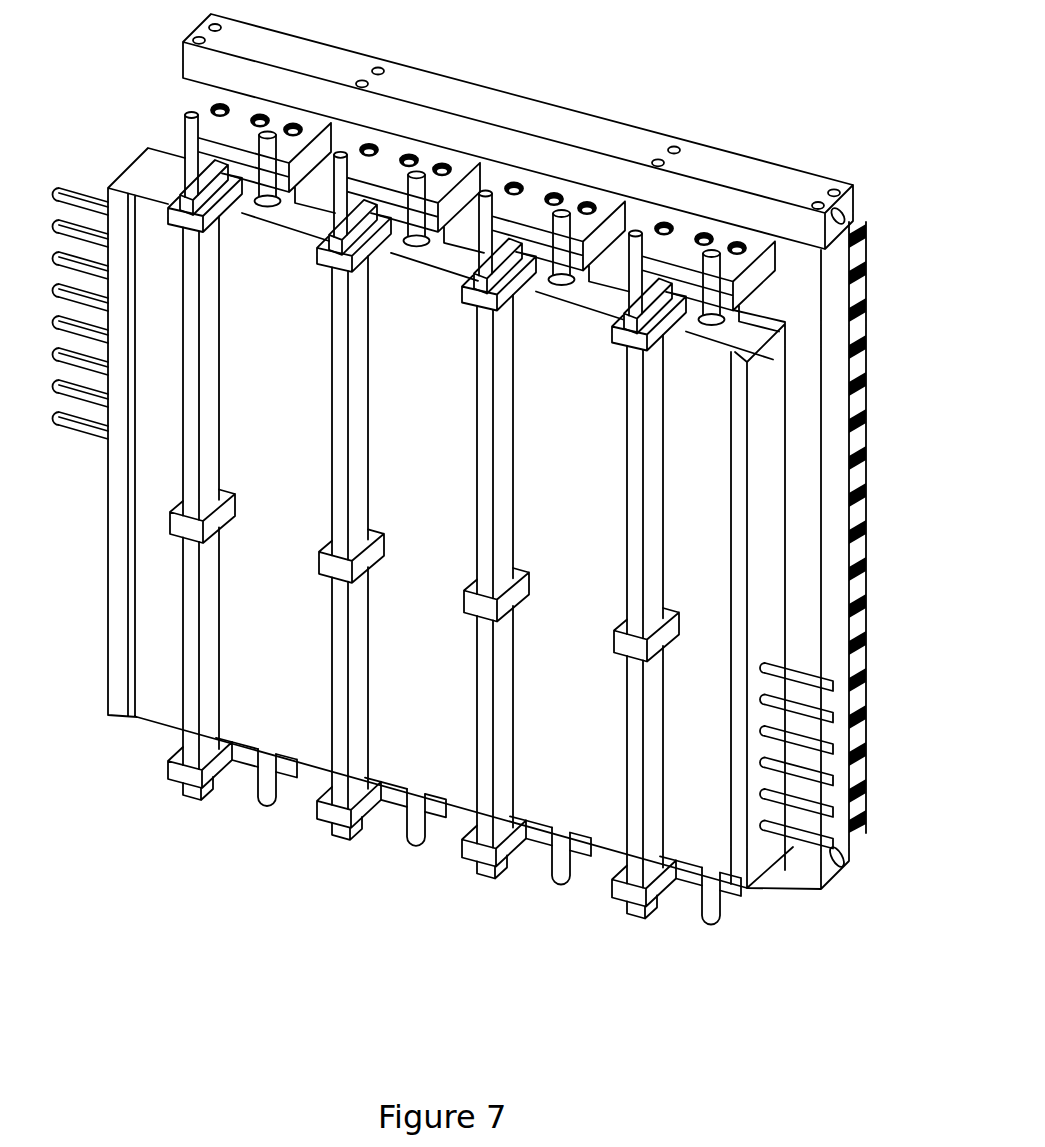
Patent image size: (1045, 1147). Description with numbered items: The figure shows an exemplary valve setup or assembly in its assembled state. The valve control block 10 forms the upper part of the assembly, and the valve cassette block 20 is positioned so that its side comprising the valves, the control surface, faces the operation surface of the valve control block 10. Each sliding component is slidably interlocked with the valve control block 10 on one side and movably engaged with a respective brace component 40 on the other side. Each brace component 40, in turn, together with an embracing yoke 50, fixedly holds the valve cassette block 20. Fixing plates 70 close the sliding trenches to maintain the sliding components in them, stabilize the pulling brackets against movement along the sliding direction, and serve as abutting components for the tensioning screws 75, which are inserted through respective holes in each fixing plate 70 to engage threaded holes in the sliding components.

The valve control block 10 is at (807, 188).
The valve cassette block 20 is at (117, 572).
The brace component 40 is at (167, 773).
The embracing yoke 50 is at (340, 668).
The fixing plate 70 is at (750, 275).
The tensioning screw 75 is at (560, 188).